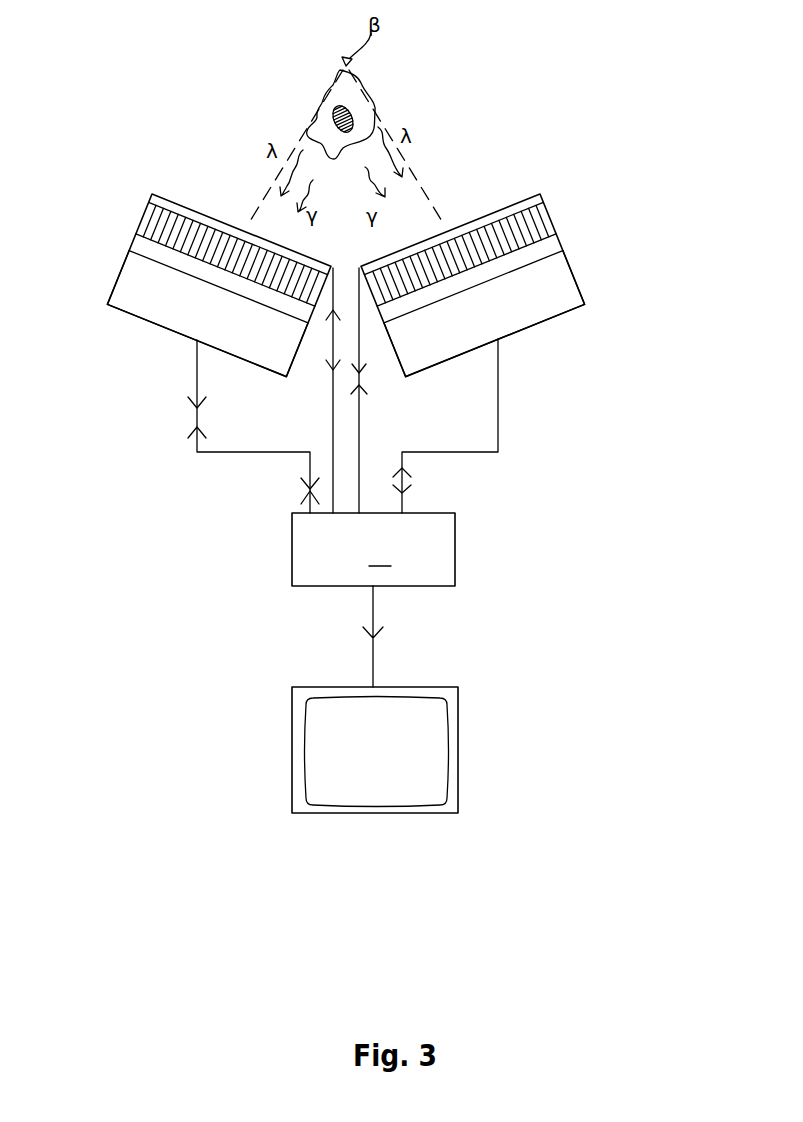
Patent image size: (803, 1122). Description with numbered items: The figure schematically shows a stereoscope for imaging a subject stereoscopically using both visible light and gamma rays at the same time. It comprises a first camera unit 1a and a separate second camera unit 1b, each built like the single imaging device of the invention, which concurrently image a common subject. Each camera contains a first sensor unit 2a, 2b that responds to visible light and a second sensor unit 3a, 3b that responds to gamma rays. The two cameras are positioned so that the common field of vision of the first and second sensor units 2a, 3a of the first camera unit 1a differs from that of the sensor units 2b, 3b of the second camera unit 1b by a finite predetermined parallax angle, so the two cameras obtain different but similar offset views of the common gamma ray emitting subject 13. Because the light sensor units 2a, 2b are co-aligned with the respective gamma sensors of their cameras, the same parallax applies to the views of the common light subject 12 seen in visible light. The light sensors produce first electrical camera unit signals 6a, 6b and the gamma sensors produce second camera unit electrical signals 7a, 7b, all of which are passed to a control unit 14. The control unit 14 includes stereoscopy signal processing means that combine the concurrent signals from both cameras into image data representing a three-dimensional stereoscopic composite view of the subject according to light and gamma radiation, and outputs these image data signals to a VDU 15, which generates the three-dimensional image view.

The first camera unit 1a is at (103, 265).
The second camera unit 1b is at (578, 234).
The first sensor unit of first camera unit 2a is at (152, 194).
The first sensor unit of second camera unit 2b is at (540, 194).
The second sensor unit of first camera unit 3a is at (106, 303).
The second sensor unit of second camera unit 3b is at (574, 310).
The first camera unit electrical signals 6a is at (333, 391).
The first camera unit electrical signals of second camera unit 6b is at (360, 407).
The second camera unit electrical signals 7a is at (220, 452).
The second camera unit electrical signals of second camera unit 7b is at (502, 385).
The light subject 12 is at (362, 88).
The gamma ray emitting subject 13 is at (316, 118).
The control unit 14 is at (373, 549).
The VDU 15 is at (452, 731).